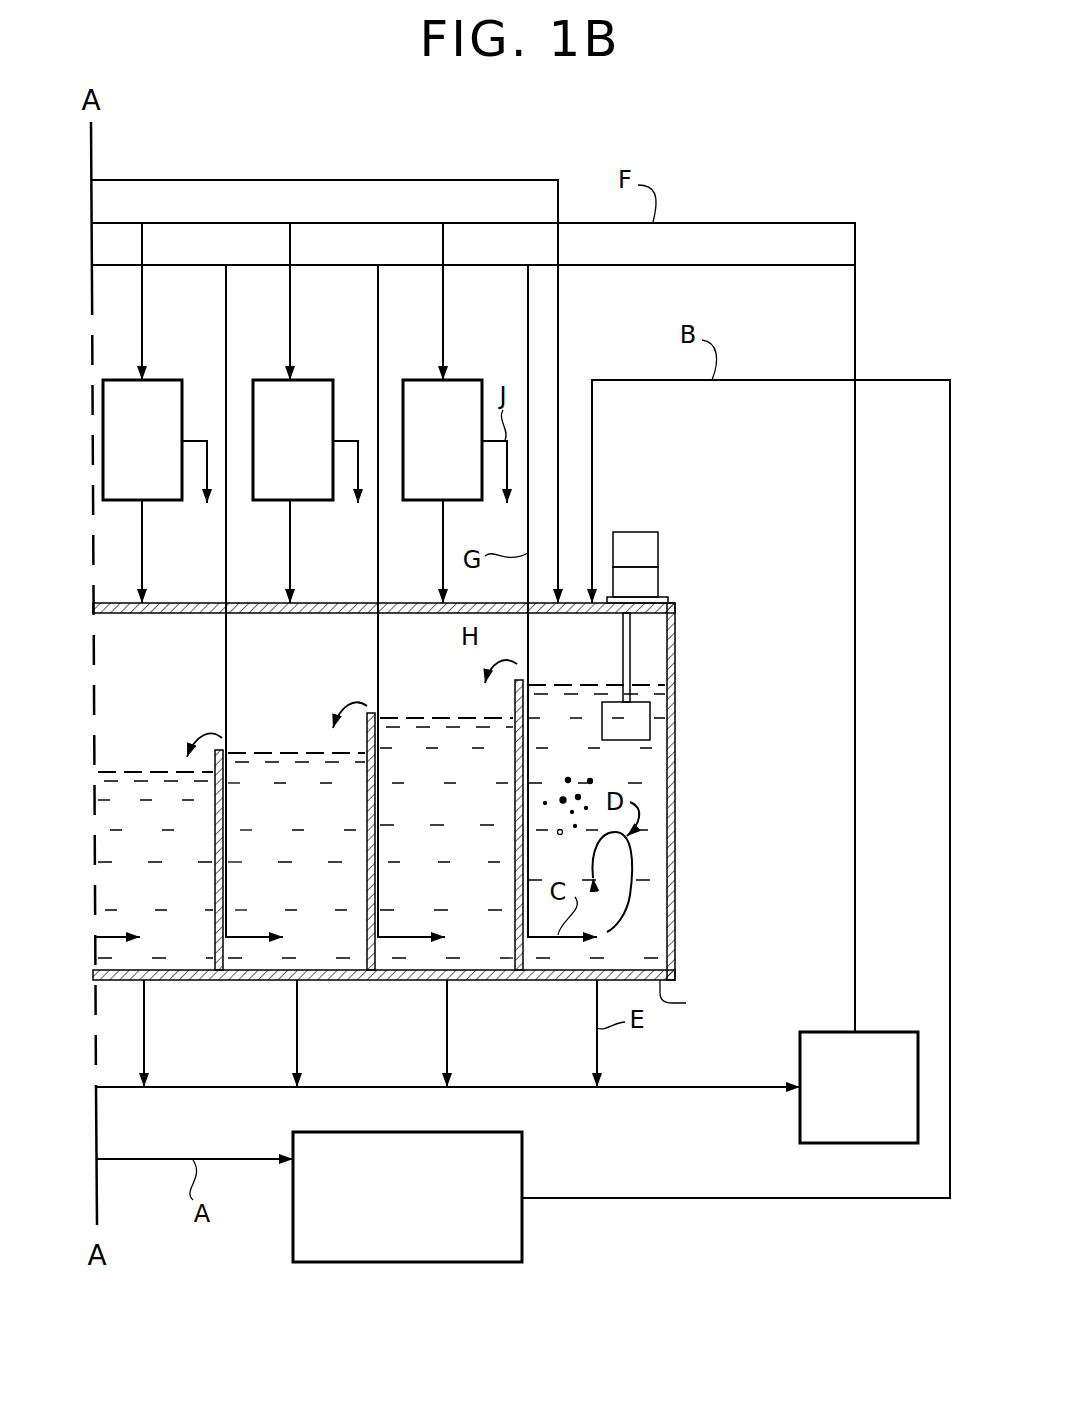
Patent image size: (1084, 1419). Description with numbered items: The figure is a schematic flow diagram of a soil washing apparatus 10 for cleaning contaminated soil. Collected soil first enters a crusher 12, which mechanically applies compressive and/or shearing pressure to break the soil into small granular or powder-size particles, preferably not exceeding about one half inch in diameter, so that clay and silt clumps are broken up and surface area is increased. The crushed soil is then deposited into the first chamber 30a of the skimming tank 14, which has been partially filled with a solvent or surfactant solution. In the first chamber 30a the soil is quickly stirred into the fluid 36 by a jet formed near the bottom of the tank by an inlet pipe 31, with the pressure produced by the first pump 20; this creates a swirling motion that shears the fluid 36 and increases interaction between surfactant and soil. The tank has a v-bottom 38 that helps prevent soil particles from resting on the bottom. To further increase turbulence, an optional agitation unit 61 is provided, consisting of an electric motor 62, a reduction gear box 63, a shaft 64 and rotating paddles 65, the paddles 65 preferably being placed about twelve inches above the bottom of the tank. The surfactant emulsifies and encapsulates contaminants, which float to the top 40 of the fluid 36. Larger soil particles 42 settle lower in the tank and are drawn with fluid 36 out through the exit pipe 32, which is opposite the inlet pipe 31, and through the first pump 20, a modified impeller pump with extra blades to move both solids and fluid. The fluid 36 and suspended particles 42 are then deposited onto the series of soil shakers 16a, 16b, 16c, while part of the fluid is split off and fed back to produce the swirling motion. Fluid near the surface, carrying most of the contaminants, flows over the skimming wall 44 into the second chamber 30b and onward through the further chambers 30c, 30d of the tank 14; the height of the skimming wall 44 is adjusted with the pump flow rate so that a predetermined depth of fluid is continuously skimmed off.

The apparatus 10 is at (767, 163).
The crusher 12 is at (505, 1243).
The skimming tank 14 is at (681, 700).
The soil shaker 16a is at (458, 395).
The soil shaker 16b is at (306, 397).
The soil shaker 16c is at (158, 395).
The first pump 20 is at (826, 1048).
The first chamber 30a is at (584, 734).
The second chamber 30b is at (466, 804).
The third chamber 30c is at (316, 818).
The fourth chamber 30d is at (176, 818).
The inlet pipe 31 is at (560, 937).
The exit pipe 32 is at (597, 1055).
The fluid 36 is at (650, 826).
The v-bottom 38 is at (690, 999).
The top of the fluid 40 is at (590, 680).
The soil particles 42 is at (555, 830).
The skimming wall 44 is at (213, 862).
The agitation unit 61 is at (634, 529).
The electric motor 62 is at (645, 551).
The reduction gear box 63 is at (648, 585).
The shaft 64 is at (627, 640).
The rotating paddles 65 is at (638, 728).